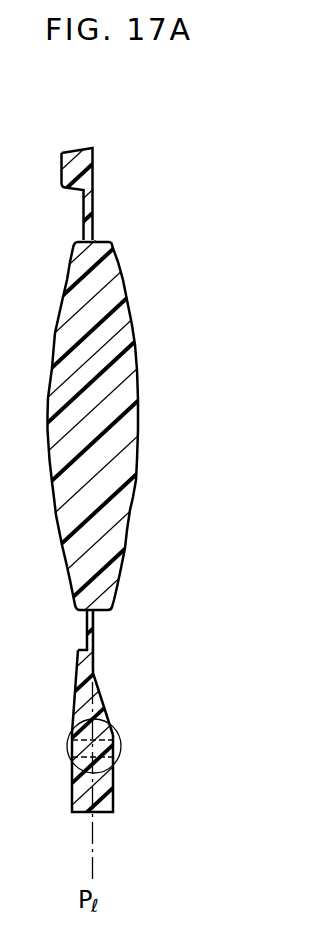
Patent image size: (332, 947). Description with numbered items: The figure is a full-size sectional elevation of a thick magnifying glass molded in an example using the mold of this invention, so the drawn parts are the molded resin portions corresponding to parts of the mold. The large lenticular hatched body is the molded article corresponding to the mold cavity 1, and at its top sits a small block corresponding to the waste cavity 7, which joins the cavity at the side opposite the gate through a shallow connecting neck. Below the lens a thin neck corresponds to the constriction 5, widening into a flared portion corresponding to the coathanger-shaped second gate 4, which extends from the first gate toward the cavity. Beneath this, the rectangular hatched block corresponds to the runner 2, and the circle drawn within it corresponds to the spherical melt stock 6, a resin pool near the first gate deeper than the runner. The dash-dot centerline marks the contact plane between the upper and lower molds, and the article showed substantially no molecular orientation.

The mold cavity 1 is at (115, 303).
The runner 2 is at (112, 797).
The second gate 4 is at (75, 707).
The constriction 5 is at (87, 642).
The melt stock 6 is at (115, 750).
The waste cavity 7 is at (62, 158).